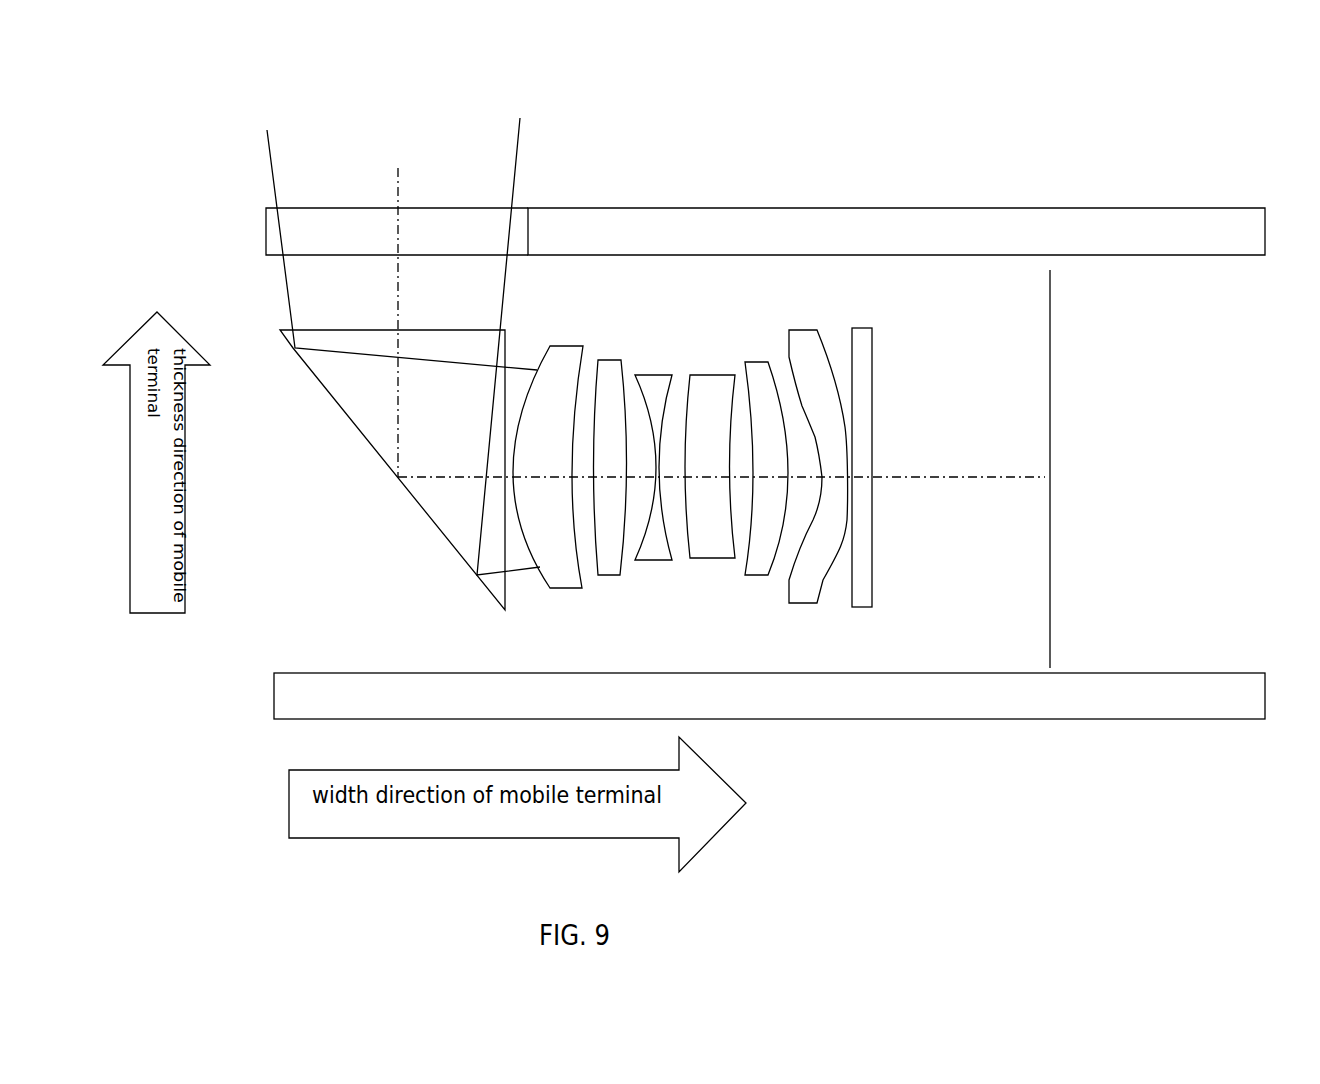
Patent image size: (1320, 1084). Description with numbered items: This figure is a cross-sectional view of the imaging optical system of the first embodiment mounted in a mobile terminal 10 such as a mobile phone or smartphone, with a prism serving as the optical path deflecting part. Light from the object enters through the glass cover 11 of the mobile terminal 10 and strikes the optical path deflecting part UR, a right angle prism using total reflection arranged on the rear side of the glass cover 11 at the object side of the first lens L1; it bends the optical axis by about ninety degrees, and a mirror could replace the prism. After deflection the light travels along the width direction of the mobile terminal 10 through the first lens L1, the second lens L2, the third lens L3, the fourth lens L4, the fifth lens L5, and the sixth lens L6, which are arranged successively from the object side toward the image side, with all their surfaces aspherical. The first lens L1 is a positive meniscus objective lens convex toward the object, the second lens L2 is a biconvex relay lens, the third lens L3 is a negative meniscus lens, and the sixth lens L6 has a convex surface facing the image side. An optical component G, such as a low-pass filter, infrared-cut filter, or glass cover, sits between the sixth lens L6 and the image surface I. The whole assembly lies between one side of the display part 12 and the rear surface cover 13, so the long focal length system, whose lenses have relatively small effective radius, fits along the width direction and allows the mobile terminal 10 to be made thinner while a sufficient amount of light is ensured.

The mobile terminal 10 is at (1215, 168).
The glass cover 11 is at (348, 207).
The display part 12 is at (837, 208).
The rear surface cover 13 is at (1049, 719).
The optical path deflecting part UR is at (458, 330).
The first lens L1 is at (565, 344).
The second lens L2 is at (608, 358).
The third lens L3 is at (650, 373).
The fourth lens L4 is at (712, 373).
The fifth lens L5 is at (755, 360).
The sixth lens L6 is at (803, 330).
The optical component G is at (867, 328).
The image surface I is at (1052, 540).